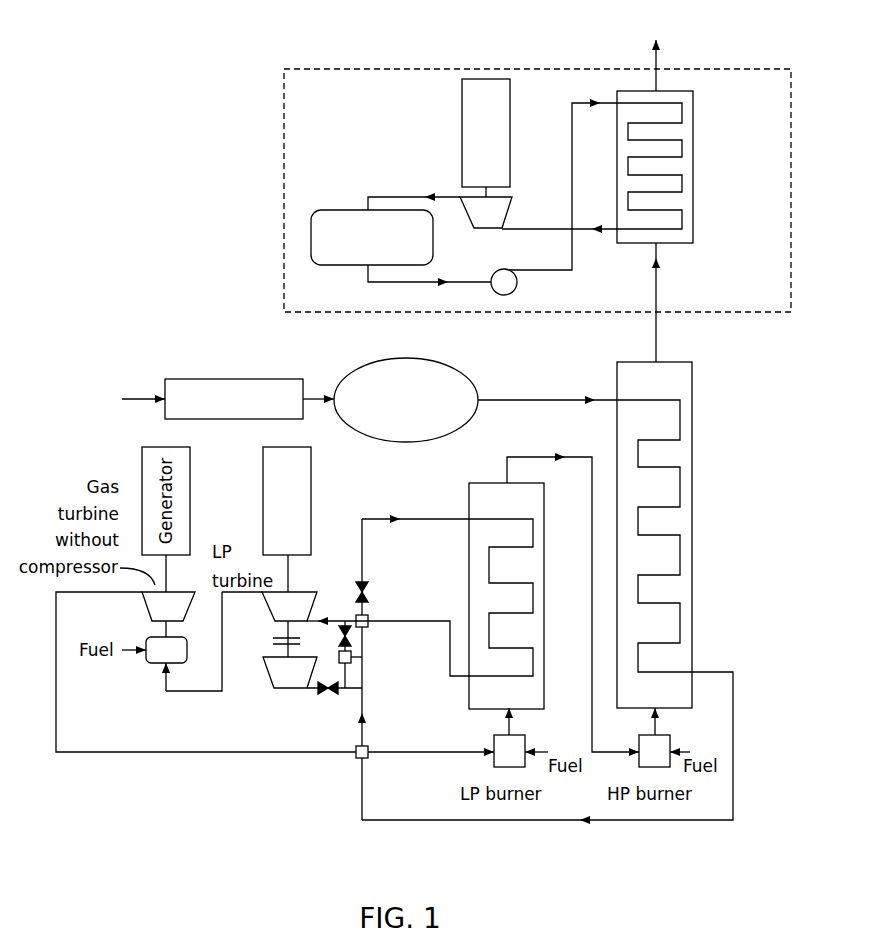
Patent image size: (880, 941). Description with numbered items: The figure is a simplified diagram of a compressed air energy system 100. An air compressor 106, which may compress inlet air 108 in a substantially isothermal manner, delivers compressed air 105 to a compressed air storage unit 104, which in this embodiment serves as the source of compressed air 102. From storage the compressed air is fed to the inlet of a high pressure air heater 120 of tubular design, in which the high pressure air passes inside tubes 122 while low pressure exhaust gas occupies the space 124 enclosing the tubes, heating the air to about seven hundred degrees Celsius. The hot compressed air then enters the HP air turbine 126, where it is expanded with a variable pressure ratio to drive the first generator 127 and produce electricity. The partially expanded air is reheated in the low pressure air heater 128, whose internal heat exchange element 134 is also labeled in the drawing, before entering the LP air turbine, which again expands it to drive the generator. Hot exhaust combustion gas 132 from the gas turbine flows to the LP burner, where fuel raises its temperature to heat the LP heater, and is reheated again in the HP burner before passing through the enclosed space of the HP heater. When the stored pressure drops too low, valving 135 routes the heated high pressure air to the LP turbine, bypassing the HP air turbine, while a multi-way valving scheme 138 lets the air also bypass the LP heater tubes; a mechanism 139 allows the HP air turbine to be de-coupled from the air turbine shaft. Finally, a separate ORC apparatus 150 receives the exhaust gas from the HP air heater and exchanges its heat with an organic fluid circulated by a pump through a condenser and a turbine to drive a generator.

The compressed air energy system 100 is at (165, 67).
The ORC apparatus 150 is at (384, 68).
The air compressor 106 is at (208, 378).
The compressed air 105 is at (328, 392).
The inlet air 108 is at (136, 402).
The source of compressed air 102 is at (503, 388).
The compressed air storage unit 104 is at (470, 420).
The first generator 127 is at (313, 478).
The tubes 122 is at (680, 486).
The high pressure air heater 120 is at (692, 540).
The space enclosing the tubes 124 is at (676, 591).
The low pressure air heater 128 is at (469, 526).
The LP air heater heat exchange coil 134 is at (537, 688).
The multi-way valving scheme 138 is at (343, 611).
The mechanism 139 is at (261, 642).
The valving 135 is at (368, 663).
The high pressure air turbine 126 is at (292, 681).
The hot exhaust combustion gas 132 is at (140, 753).